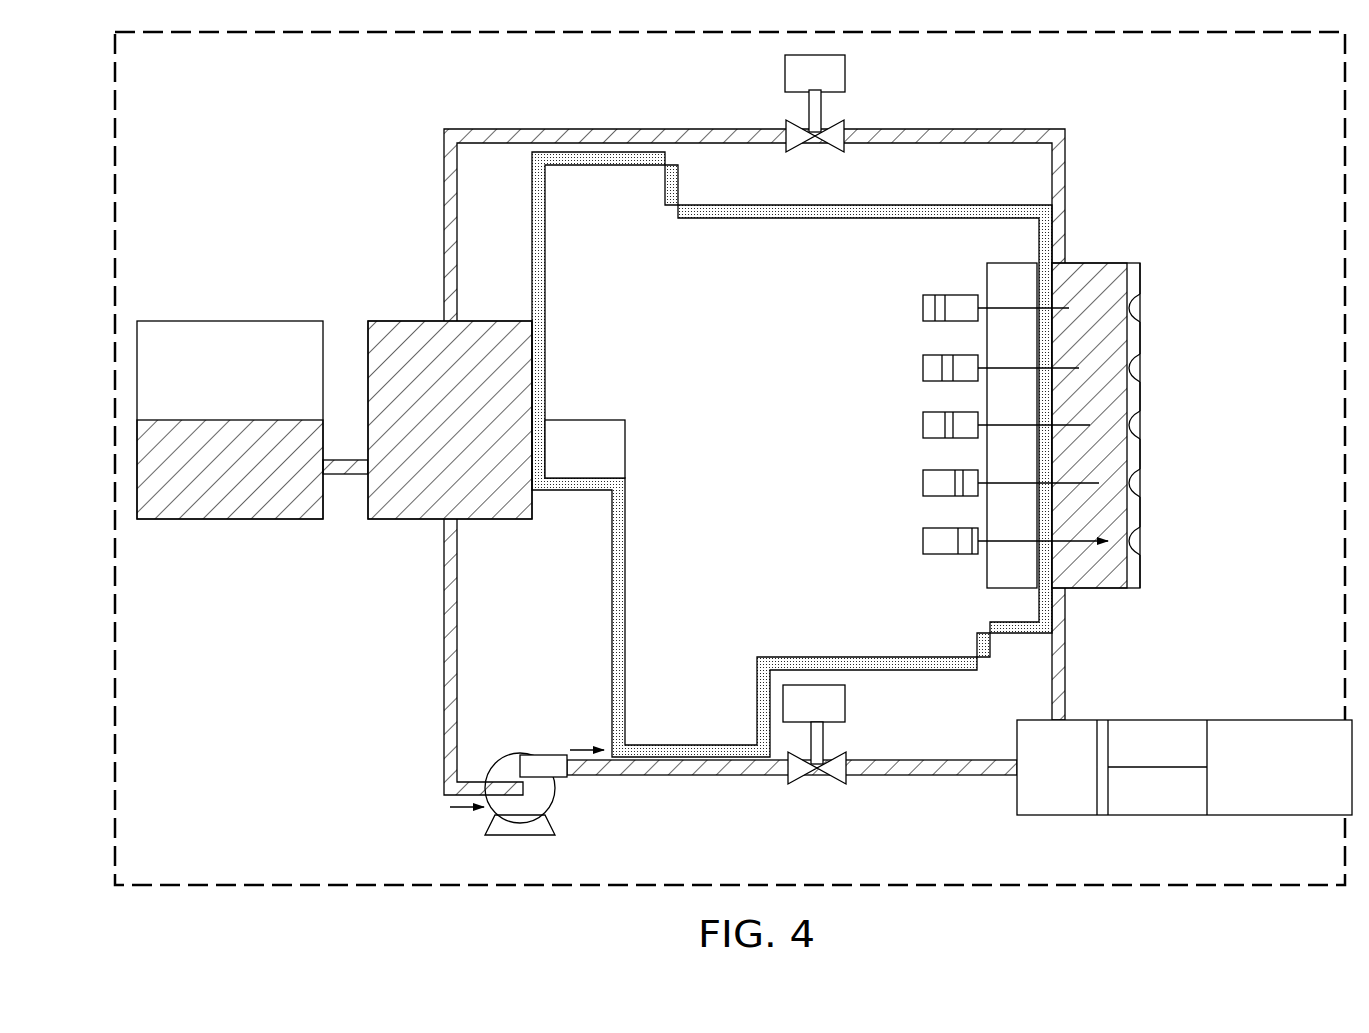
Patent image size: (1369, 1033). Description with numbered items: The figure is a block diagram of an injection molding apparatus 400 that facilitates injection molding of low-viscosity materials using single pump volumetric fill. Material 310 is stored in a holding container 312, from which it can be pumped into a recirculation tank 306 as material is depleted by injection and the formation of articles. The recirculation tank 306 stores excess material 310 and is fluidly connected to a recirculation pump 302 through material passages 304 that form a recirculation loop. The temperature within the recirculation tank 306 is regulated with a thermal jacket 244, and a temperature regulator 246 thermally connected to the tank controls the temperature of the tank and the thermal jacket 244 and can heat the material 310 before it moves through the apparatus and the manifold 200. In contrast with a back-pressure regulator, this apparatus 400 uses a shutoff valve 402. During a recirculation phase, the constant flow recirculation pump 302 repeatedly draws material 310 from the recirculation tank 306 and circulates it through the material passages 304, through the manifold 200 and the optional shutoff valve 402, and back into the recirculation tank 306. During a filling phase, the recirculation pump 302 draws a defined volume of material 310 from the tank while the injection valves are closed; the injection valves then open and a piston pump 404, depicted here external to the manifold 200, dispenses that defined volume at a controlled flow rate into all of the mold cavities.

The injection molding apparatus 400 is at (112, 142).
The holding container 312 is at (232, 320).
The recirculation tank 306 is at (412, 320).
The material 310 is at (1085, 272).
The temperature regulator 246 is at (627, 450).
The thermal jacket 244 is at (905, 656).
The recirculation pump 302 is at (552, 795).
The shutoff valve 402 is at (821, 148).
The material passages 304 is at (930, 777).
The manifold 200 is at (1097, 594).
The piston pump 404 is at (1160, 720).